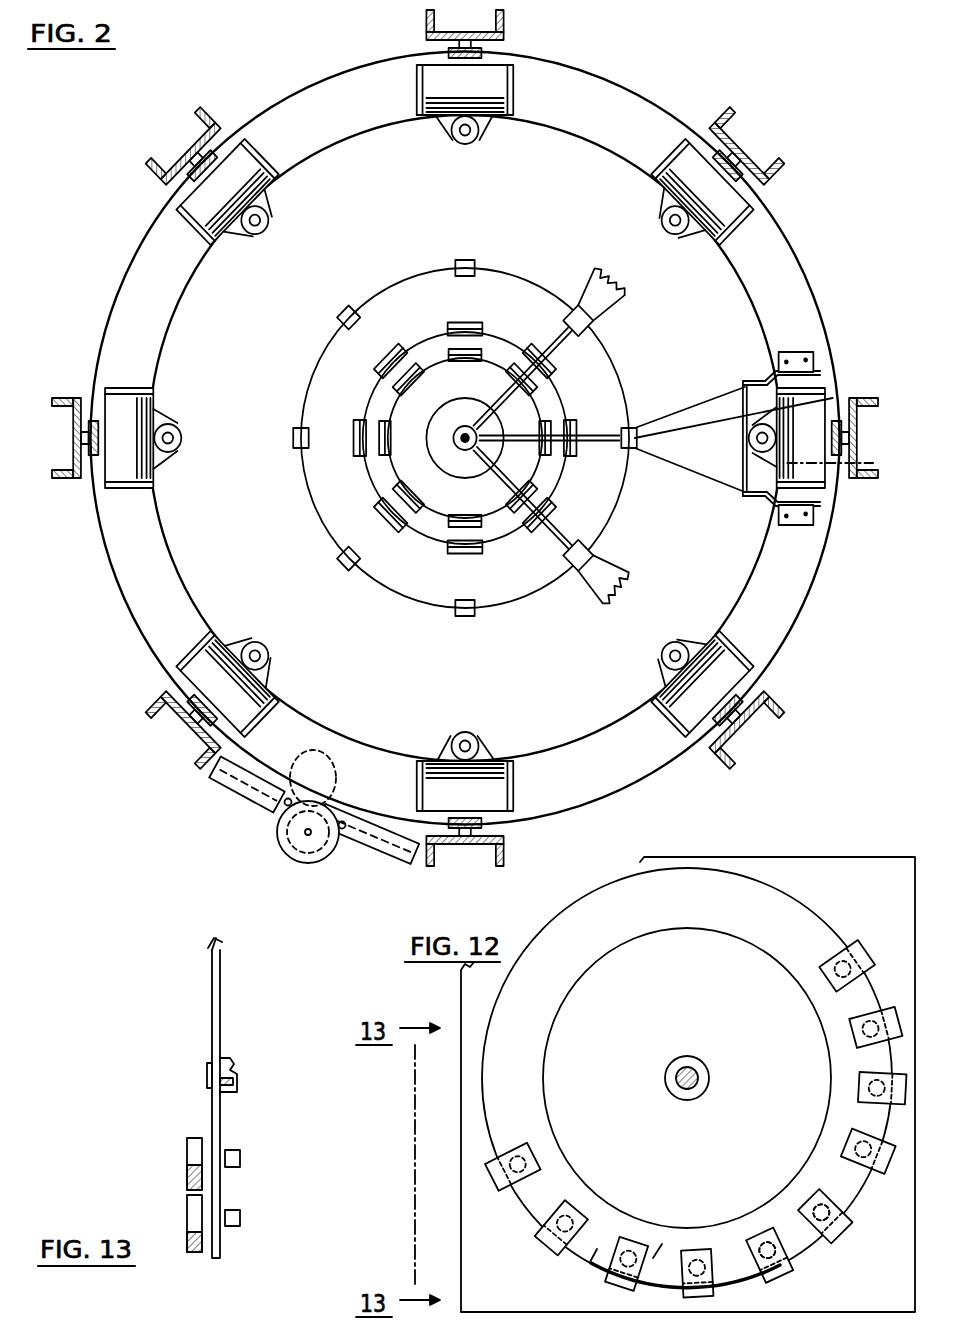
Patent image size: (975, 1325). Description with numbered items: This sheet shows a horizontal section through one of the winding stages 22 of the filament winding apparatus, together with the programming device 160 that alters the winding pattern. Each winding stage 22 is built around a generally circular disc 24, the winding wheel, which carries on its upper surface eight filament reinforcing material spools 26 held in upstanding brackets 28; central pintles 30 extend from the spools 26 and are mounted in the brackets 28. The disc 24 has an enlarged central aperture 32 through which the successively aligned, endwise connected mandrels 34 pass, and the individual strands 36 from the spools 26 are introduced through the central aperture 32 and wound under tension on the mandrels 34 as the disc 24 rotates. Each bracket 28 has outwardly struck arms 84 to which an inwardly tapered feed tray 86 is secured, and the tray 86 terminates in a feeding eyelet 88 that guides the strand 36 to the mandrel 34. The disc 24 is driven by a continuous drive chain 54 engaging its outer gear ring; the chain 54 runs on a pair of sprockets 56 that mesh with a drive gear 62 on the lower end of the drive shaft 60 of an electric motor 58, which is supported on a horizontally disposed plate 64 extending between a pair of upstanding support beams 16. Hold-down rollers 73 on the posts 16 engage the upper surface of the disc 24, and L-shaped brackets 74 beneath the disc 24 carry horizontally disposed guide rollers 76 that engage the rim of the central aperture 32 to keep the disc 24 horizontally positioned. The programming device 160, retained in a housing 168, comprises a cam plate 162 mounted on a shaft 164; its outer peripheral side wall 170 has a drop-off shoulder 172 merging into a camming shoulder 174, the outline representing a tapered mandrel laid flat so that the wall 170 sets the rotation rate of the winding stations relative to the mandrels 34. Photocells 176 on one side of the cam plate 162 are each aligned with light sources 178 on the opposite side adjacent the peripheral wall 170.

In FIG. 2, the upstanding support beams 16 is at (506, 28).
In FIG. 2, the winding stages 22 is at (642, 97).
In FIG. 2, the circular disc 24 is at (800, 256).
In FIG. 2, the filament reinforcing material spools 26 is at (433, 117).
In FIG. 2, the upstanding brackets 28 is at (795, 352).
In FIG. 2, the central pintles 30 is at (844, 446).
In FIG. 2, the central aperture 32 is at (556, 129).
In FIG. 2, the mandrels 34 is at (463, 437).
In FIG. 2, the strands 36 is at (707, 420).
In FIG. 2, the drive chain 54 is at (368, 817).
In FIG. 2, the sprockets 56 is at (296, 758).
In FIG. 2, the electric motor 58 is at (323, 853).
In FIG. 2, the drive shaft 60 is at (310, 835).
In FIG. 2, the drive gear 62 is at (277, 848).
In FIG. 2, the horizontally disposed plate 64 is at (232, 778).
In FIG. 2, the hold-down rollers 73 is at (740, 142).
In FIG. 2, the L-shaped brackets 74 is at (487, 753).
In FIG. 2, the guide rollers 76 is at (678, 235).
In FIG. 2, the outwardly struck arms 84 is at (760, 383).
In FIG. 2, the feed tray 86 is at (735, 490).
In FIG. 2, the feeding eyelet 88 is at (456, 263).
In FIG. 12, the programming device 160 is at (812, 852).
In FIG. 12, the cam plate 162 is at (781, 921).
In FIG. 13, the cam plate 162 is at (218, 992).
In FIG. 12, the shaft 164 is at (702, 1079).
In FIG. 13, the shaft 164 is at (232, 1064).
In FIG. 12, the housing 168 is at (882, 858).
In FIG. 12, the outer peripheral side wall 170 is at (818, 923).
In FIG. 12, the drop-off shoulder 172 is at (591, 1249).
In FIG. 12, the camming shoulder 174 is at (655, 1252).
In FIG. 12, the photocells 176 is at (860, 966).
In FIG. 13, the photocells 176 is at (192, 1210).
In FIG. 12, the light sources 178 is at (768, 1240).
In FIG. 13, the light sources 178 is at (238, 1215).